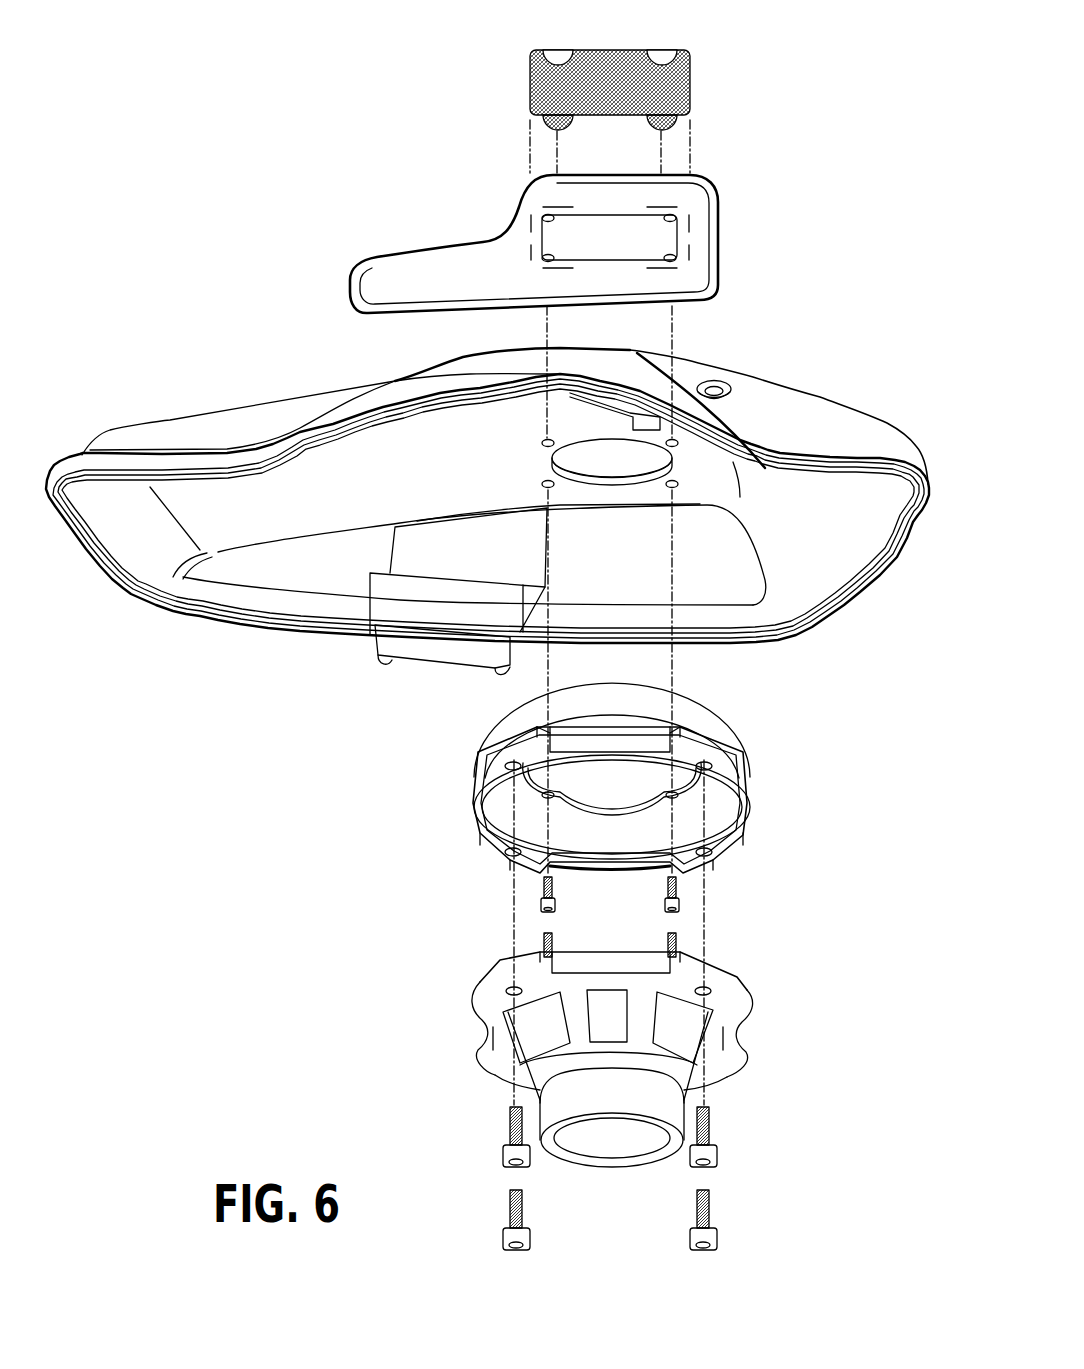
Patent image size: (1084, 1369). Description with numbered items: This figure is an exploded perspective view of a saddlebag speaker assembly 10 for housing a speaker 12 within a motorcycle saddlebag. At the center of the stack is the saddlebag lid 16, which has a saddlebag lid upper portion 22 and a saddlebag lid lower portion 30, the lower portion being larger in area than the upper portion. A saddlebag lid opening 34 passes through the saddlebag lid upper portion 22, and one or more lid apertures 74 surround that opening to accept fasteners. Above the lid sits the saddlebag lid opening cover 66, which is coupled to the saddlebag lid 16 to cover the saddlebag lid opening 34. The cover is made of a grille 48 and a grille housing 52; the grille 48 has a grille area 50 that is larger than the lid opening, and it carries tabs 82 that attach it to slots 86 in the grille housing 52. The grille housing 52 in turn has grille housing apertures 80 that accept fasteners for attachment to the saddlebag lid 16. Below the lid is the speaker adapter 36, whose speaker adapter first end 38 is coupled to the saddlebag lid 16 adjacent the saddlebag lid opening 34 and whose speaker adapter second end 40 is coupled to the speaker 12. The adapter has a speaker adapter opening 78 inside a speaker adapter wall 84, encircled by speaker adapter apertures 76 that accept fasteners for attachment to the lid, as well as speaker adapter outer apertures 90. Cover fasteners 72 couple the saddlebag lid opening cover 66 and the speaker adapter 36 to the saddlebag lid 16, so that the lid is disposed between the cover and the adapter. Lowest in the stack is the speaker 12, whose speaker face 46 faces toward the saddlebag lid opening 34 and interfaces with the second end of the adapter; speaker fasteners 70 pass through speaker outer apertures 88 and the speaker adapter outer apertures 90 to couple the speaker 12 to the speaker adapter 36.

The saddlebag speaker assembly 10 is at (881, 248).
The speaker 12 is at (717, 1047).
The saddlebag lid 16 is at (835, 416).
The saddlebag lid upper portion 22 is at (830, 383).
The saddlebag lid lower portion 30 is at (914, 457).
The saddlebag lid opening 34 is at (576, 446).
The speaker adapter 36 is at (700, 735).
The speaker adapter first end 38 is at (479, 704).
The speaker adapter second end 40 is at (737, 797).
The speaker face 46 is at (723, 960).
The grille 48 is at (628, 62).
The grille area 50 is at (688, 243).
The grille housing 52 is at (692, 177).
The saddlebag lid opening cover 66 is at (352, 328).
The speaker fasteners 70 is at (517, 1203).
The cover fasteners 72 is at (680, 946).
The lid apertures 74 is at (679, 443).
The speaker adapter apertures 76 is at (713, 851).
The speaker adapter opening 78 is at (475, 800).
The grille housing apertures 80 is at (672, 256).
The tabs 82 is at (558, 62).
The speaker adapter wall 84 is at (500, 814).
The slots 86 is at (552, 205).
The speaker outer apertures 88 is at (493, 1073).
The speaker adapter outer apertures 90 is at (500, 746).